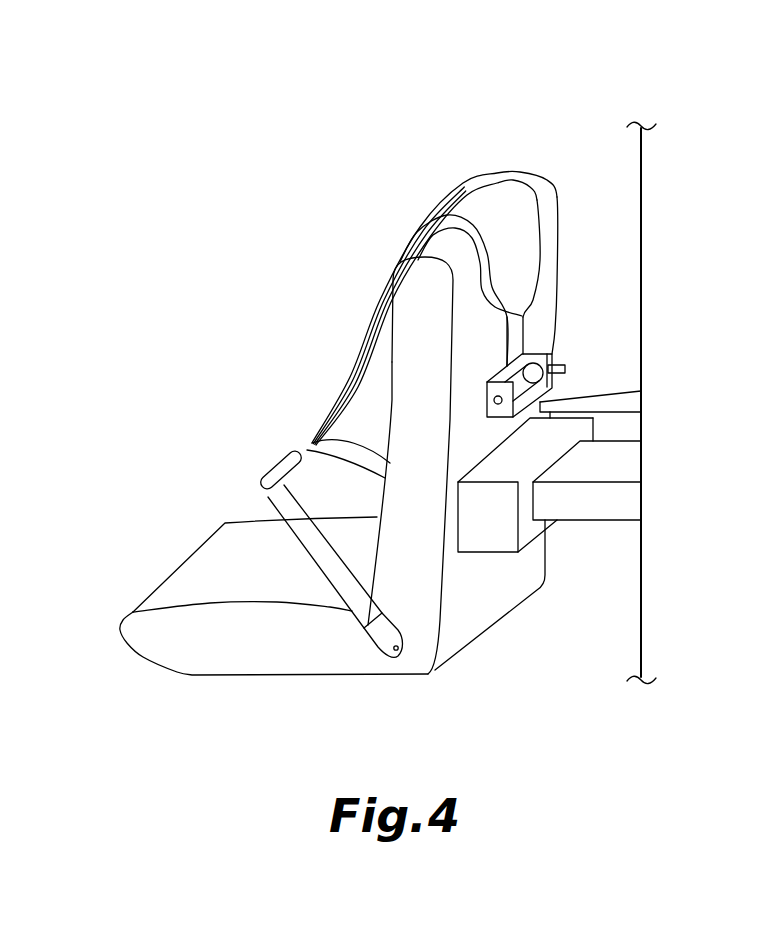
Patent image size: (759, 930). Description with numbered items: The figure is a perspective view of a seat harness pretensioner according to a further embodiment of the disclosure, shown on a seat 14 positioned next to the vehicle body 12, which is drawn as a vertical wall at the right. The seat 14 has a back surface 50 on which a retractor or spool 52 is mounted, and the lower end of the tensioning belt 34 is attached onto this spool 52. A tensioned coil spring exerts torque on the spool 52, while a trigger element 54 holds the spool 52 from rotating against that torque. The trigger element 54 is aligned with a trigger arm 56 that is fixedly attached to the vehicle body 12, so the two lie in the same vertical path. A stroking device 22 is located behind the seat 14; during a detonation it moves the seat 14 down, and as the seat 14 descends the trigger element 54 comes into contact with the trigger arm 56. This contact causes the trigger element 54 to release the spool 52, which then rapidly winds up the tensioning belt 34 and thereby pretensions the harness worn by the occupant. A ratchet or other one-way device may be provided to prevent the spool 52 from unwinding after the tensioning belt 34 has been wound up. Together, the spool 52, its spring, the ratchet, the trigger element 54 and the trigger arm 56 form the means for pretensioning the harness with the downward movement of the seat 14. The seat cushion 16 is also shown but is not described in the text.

The vehicle body 12 is at (641, 215).
The seat 14 is at (417, 328).
The seat cushion 16 is at (287, 530).
The stroking device 22 is at (493, 533).
The tensioning belt 34 is at (517, 337).
The back surface 50 is at (550, 263).
The retractor or spool 52 is at (487, 405).
The trigger element 54 is at (565, 368).
The trigger arm 56 is at (610, 405).